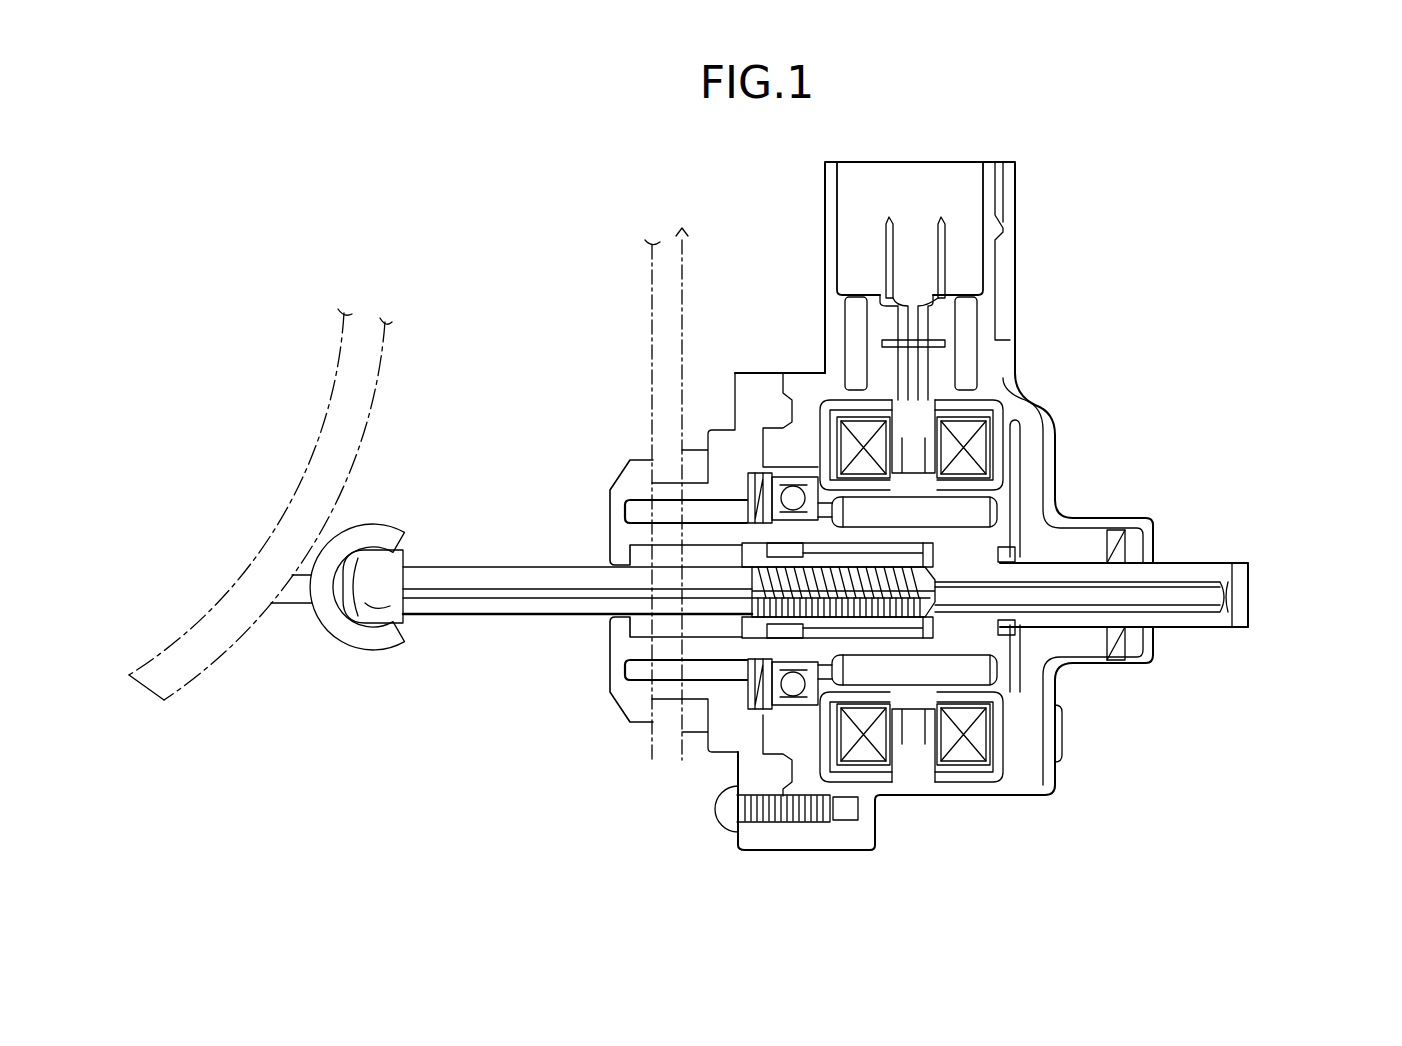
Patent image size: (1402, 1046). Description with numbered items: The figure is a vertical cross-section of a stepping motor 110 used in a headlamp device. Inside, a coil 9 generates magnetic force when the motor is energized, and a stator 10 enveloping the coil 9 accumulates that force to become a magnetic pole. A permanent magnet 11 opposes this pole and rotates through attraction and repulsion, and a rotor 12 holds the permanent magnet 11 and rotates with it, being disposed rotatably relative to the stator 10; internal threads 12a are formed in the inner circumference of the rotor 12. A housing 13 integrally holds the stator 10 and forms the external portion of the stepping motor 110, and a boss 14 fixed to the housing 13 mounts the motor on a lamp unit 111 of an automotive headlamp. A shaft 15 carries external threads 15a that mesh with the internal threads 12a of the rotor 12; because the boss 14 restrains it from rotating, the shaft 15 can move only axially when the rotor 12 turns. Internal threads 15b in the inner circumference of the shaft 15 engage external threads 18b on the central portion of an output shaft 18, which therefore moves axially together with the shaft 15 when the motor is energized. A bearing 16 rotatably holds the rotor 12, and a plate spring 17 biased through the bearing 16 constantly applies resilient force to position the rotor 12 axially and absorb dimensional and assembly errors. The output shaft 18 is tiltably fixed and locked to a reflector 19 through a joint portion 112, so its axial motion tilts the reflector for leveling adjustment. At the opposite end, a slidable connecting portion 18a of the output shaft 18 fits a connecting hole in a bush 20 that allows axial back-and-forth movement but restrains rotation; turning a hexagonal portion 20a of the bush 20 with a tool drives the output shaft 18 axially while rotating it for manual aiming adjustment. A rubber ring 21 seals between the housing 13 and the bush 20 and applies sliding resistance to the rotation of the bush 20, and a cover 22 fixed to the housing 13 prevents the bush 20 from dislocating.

The coil 9 is at (1000, 425).
The stator 10 is at (1010, 447).
The permanent magnet 11 is at (917, 686).
The rotor 12 is at (985, 638).
The internal threads 12a is at (873, 645).
The housing 13 is at (1058, 655).
The boss 14 is at (793, 700).
The shaft 15 is at (750, 548).
The external threads 15a is at (822, 548).
The internal threads 15b is at (942, 622).
The bearing 16 is at (735, 722).
The plate spring 17 is at (752, 668).
The output shaft 18 is at (498, 567).
The slidable connecting portion 18a is at (1160, 580).
The external threads 18b is at (770, 568).
The reflector 19 is at (375, 400).
The bush 20 is at (1130, 627).
The hexagonal portion 20a is at (1242, 597).
The rubber ring 21 is at (1120, 545).
The cover 22 is at (1115, 672).
The stepping motor 110 is at (1005, 395).
The lamp unit 111 is at (662, 290).
The joint portion 112 is at (408, 650).